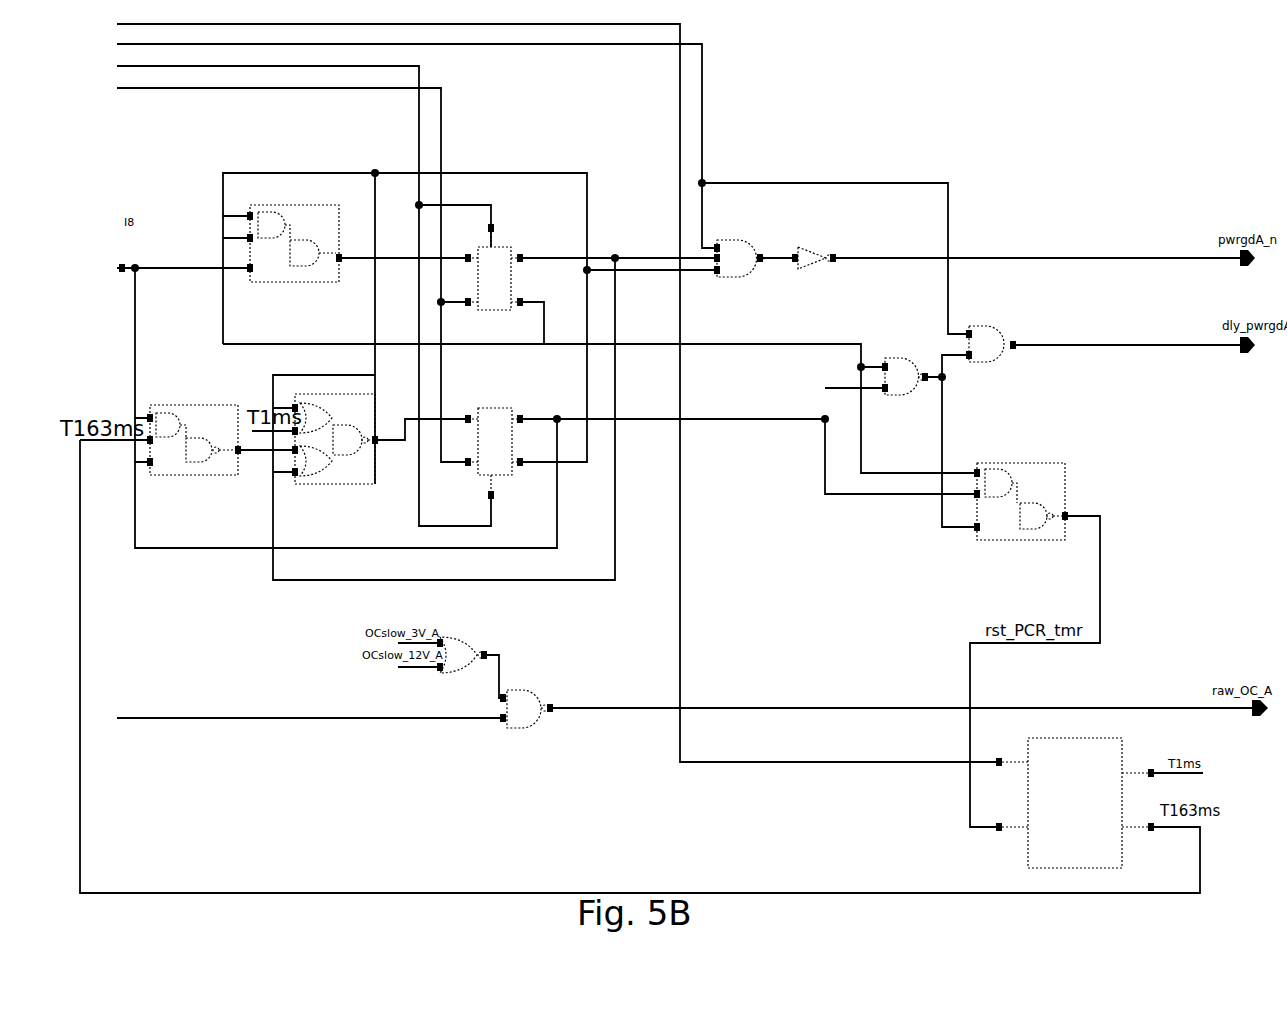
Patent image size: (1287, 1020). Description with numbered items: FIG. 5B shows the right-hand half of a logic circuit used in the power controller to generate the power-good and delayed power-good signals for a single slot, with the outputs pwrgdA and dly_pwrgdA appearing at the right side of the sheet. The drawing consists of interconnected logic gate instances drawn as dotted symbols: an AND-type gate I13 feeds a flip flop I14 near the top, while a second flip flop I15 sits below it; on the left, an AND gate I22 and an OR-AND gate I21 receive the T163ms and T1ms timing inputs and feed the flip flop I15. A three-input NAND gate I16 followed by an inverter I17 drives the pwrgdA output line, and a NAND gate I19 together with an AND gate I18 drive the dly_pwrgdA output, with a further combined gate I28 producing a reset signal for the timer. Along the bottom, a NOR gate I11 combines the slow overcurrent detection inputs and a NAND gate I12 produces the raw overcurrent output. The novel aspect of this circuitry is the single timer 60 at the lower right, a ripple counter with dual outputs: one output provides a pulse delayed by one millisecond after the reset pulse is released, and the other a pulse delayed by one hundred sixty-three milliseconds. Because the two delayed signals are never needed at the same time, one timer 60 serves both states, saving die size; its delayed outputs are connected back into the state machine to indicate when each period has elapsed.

The timer 60 is at (1028, 839).
The AND21 gate I13 is at (294, 245).
The D flip-flop DFR I14 is at (497, 269).
The D flip-flop DFA I15 is at (497, 447).
The AND2 gate I22 is at (194, 440).
The OA22 gate I21 is at (337, 439).
The NAND3 gate I16 is at (740, 251).
The inverter I17 is at (815, 247).
The NAND2 gate I19 is at (905, 369).
The AND2 gate I18 is at (1007, 337).
The OA21 gate I28 is at (1021, 501).
The NOR2 gate I11 is at (467, 648).
The NAND2 gate I12 is at (527, 703).